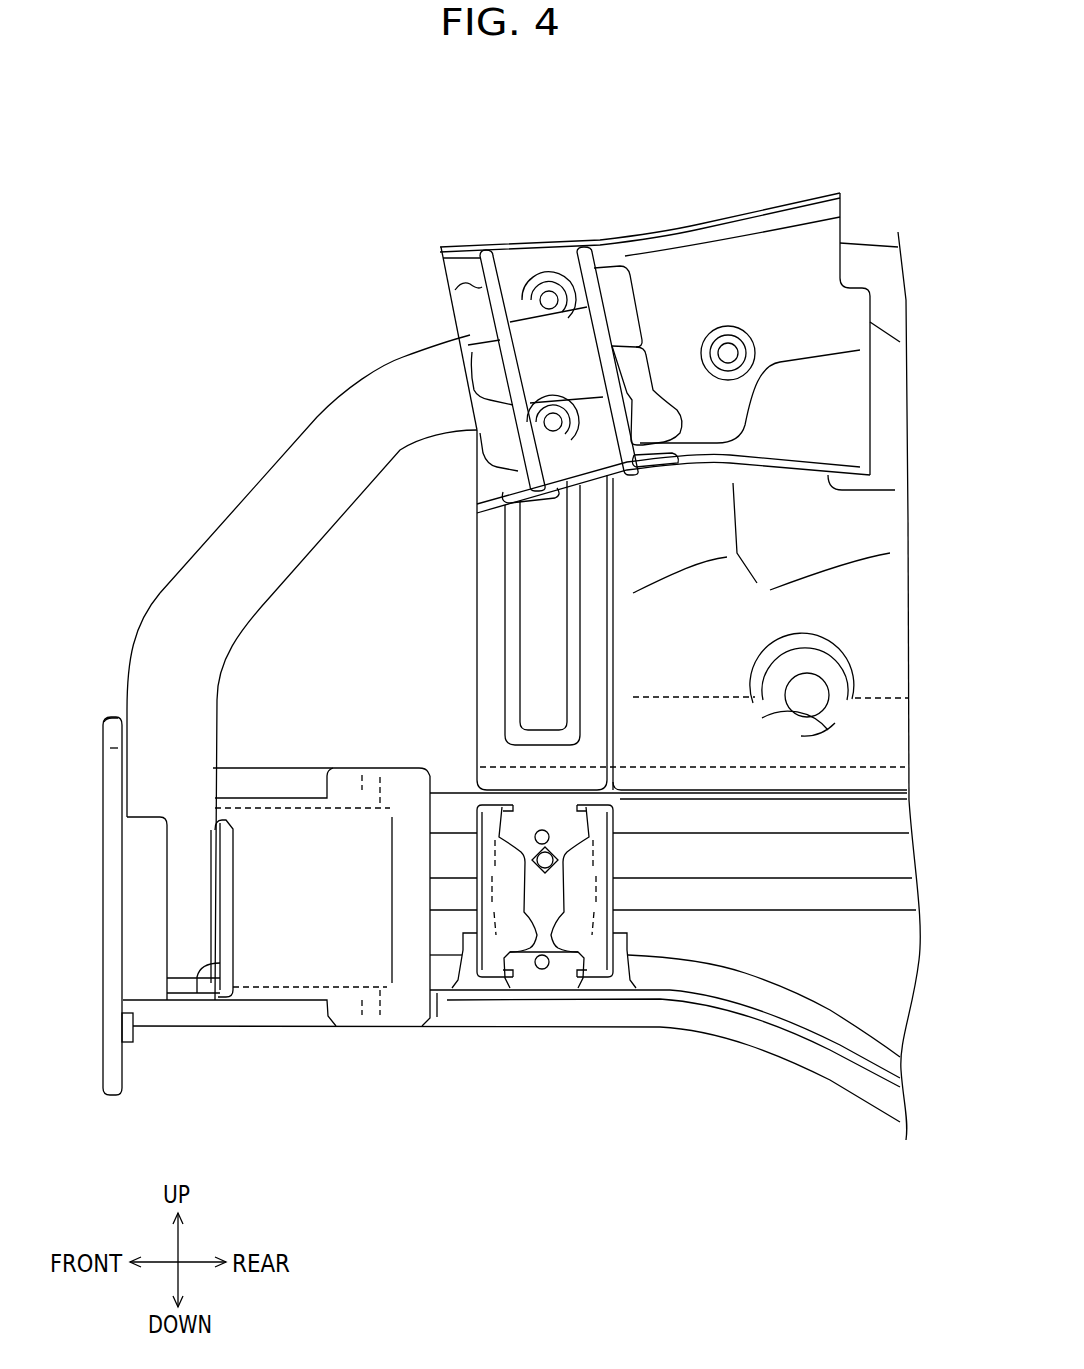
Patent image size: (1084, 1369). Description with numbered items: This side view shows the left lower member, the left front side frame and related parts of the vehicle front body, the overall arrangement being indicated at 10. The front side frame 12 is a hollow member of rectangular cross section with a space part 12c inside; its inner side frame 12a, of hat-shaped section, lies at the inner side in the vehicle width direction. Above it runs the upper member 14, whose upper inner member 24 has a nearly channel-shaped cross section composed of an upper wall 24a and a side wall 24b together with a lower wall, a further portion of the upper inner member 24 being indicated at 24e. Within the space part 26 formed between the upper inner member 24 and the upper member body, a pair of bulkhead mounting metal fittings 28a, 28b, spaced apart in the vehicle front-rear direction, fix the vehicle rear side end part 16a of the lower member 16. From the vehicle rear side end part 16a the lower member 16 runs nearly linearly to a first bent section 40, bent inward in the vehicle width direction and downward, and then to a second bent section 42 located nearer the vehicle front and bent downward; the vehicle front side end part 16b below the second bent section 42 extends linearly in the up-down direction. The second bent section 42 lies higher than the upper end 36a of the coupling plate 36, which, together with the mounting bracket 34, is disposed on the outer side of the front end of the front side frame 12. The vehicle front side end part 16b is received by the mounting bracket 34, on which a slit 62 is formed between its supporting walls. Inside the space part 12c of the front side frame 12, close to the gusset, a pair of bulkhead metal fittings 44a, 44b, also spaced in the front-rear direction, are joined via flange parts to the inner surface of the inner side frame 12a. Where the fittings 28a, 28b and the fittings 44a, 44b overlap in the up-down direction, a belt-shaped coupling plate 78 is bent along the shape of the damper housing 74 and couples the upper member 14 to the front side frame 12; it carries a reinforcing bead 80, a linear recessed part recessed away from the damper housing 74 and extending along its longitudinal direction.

The vehicle body structure 10 is at (826, 85).
The front side frame 12 is at (527, 1050).
The inner side frame 12a is at (858, 943).
The space part 12c is at (755, 951).
The upper member 14 is at (703, 201).
The lower member 16 is at (267, 445).
The vehicle rear side end part 16a is at (540, 290).
The vehicle front side end part 16b is at (231, 885).
The upper inner member 24 is at (653, 221).
The upper wall 24a is at (797, 200).
The side wall 24b is at (857, 245).
The lower flange of rail outer panel 24e is at (892, 490).
The space part 26 is at (803, 321).
The bulkhead mounting metal fitting 28a is at (483, 250).
The bulkhead mounting metal fitting 28b is at (582, 252).
The mounting bracket 34 is at (247, 934).
The coupling plate 36 is at (86, 1051).
The upper end 36a is at (108, 717).
The first bent section 40 is at (363, 375).
The second bent section 42 is at (147, 613).
The bulkhead metal fitting 44a is at (463, 854).
The bulkhead metal fitting 44b is at (630, 872).
The slit 62 is at (197, 995).
The damper housing 74 is at (870, 597).
The coupling plate 78 is at (463, 594).
The reinforcing bead 80 is at (530, 650).